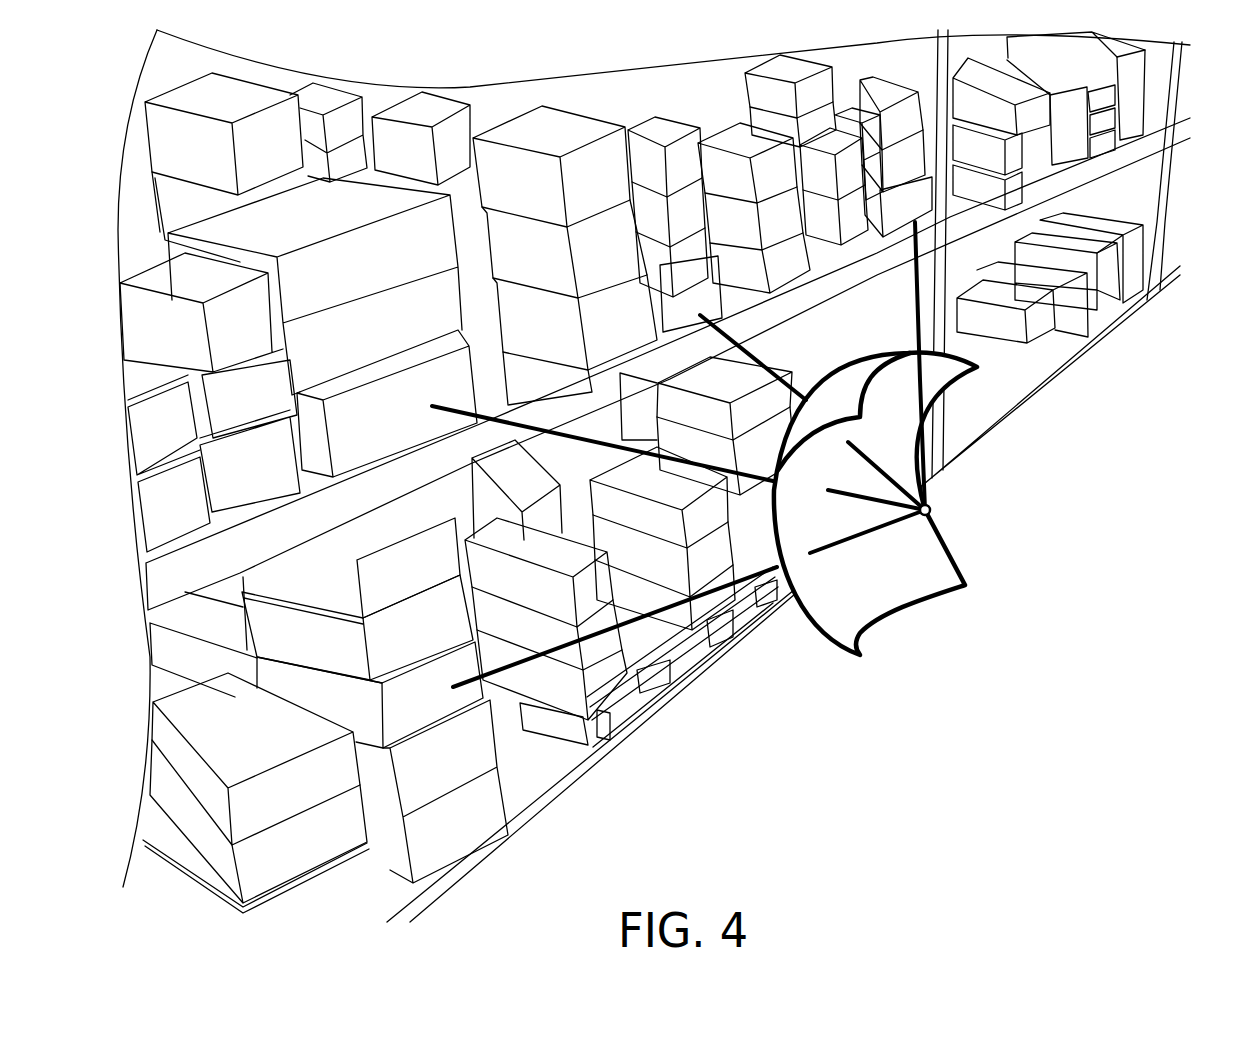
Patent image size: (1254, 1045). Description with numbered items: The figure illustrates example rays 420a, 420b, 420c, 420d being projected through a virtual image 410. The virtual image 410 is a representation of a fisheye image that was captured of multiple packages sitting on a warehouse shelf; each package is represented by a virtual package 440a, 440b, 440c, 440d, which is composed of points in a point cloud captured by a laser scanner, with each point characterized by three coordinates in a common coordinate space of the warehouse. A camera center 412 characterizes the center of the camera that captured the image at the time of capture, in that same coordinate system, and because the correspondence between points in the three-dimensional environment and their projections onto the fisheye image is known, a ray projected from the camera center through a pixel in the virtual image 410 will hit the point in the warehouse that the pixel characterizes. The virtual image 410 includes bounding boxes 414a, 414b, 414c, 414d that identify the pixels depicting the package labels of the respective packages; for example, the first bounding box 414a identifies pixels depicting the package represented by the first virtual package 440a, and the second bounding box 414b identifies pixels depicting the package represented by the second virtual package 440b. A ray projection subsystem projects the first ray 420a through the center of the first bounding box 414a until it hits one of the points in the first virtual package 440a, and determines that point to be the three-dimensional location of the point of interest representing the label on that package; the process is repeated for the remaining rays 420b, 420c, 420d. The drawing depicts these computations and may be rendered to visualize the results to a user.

The virtual image 410 is at (926, 602).
The camera center 412 is at (934, 510).
The first bounding box 414a is at (787, 550).
The second bounding box 414b is at (793, 480).
The bounding box 414c is at (815, 437).
The bounding box 414d is at (892, 360).
The first ray 420a is at (677, 606).
The ray 420b is at (495, 424).
The ray 420c is at (705, 321).
The ray 420d is at (912, 275).
The first virtual package 440a is at (397, 687).
The second virtual package 440b is at (343, 407).
The virtual package 440c is at (670, 278).
The virtual package 440d is at (892, 193).